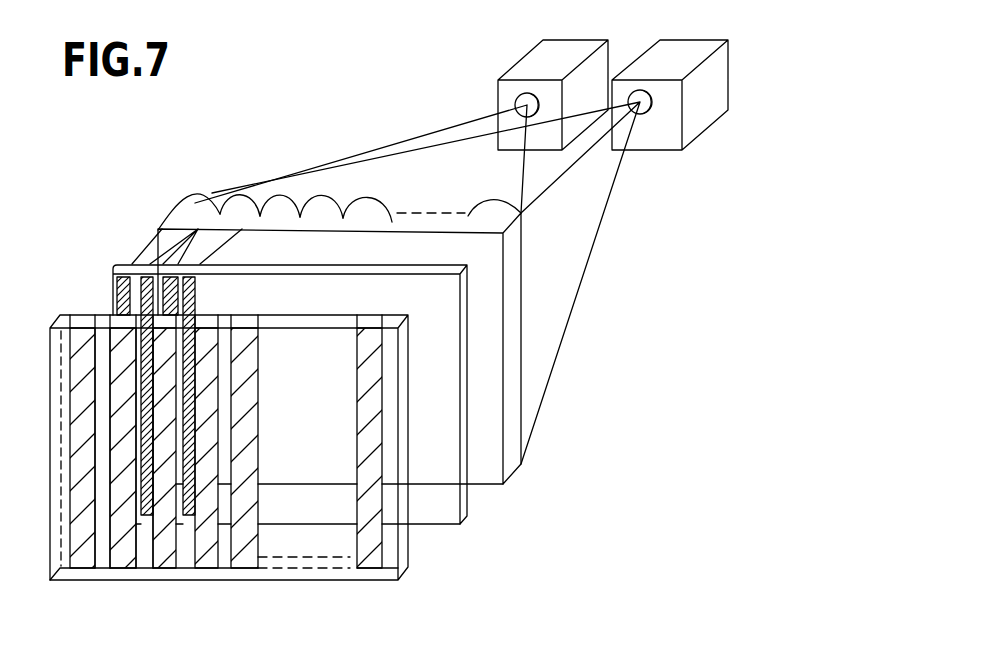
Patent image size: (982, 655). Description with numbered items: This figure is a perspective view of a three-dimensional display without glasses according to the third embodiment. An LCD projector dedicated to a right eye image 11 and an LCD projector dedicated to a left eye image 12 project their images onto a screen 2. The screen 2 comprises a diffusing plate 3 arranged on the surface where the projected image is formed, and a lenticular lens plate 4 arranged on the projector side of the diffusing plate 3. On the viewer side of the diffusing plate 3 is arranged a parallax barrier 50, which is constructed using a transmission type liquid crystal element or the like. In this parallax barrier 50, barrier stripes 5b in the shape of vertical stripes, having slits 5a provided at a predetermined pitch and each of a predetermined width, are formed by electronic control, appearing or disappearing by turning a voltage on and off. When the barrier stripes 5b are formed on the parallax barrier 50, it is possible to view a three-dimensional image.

The screen 2 is at (530, 482).
The diffusing plate 3 is at (113, 264).
The lenticular lens plate 4 is at (190, 212).
The slits 5a is at (98, 556).
The barrier stripes 5b is at (73, 562).
The LCD projector dedicated to a right eye image 11 is at (703, 117).
The LCD projector dedicated to a left eye image 12 is at (533, 57).
The parallax barrier 50 is at (53, 323).